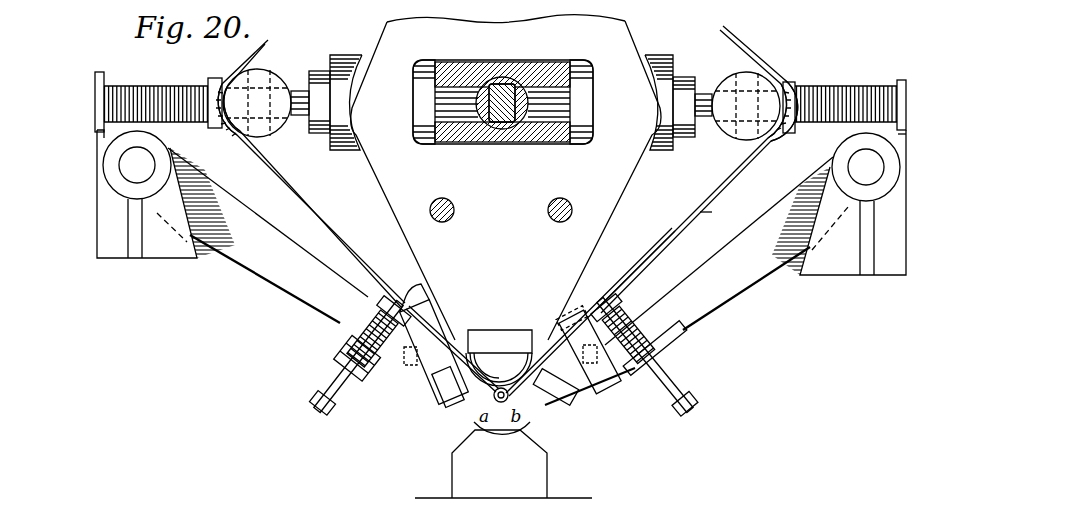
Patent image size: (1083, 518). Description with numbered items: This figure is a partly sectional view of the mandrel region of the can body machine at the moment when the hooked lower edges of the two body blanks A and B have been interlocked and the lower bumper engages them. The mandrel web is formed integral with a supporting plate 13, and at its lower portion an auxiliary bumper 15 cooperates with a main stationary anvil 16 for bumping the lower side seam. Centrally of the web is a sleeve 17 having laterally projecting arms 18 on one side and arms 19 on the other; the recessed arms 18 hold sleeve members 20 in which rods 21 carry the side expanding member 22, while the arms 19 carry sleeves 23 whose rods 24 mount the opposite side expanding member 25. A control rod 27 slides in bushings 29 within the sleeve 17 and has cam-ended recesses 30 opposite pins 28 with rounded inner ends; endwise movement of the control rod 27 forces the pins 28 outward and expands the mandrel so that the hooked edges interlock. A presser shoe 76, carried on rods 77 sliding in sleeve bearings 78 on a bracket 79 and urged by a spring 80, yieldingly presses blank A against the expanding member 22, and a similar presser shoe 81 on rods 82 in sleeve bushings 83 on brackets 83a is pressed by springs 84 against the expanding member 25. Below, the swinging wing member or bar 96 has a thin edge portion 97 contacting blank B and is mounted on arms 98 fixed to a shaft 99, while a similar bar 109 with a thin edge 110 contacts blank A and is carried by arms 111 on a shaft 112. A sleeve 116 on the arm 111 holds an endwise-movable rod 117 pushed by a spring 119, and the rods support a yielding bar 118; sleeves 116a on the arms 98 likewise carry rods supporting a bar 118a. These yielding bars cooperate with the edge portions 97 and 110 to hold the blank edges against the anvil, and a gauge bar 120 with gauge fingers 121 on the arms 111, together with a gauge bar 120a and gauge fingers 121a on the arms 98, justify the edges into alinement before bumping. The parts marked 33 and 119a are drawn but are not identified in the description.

The supporting plate 13 is at (612, 180).
The auxiliary bumper 15 is at (504, 337).
The main stationary anvil 16 is at (503, 460).
The sleeve 17 is at (573, 130).
The laterally projecting arms 18 is at (347, 58).
The laterally projecting arms 19 is at (656, 76).
The sleeve members 20 is at (422, 86).
The rods 21 is at (300, 115).
The side expanding member 22 is at (263, 86).
The sleeves 23 is at (584, 110).
The rods 24 is at (705, 94).
The side expanding member 25 is at (738, 128).
The control rod 27 is at (514, 92).
The pin 28 is at (455, 104).
The bushings 29 is at (497, 78).
The recesses 30 is at (526, 82).
The hole 33 is at (445, 220).
The presser shoe 76 is at (218, 76).
The rods 77 is at (126, 90).
The sleeve bearings 78 is at (101, 72).
The bracket 79 is at (168, 248).
The spring 80 is at (196, 90).
The presser shoe 81 is at (783, 82).
The rods 82 is at (840, 104).
The sleeve bushings 83 is at (902, 82).
The brackets 83a is at (830, 268).
The springs 84 is at (800, 96).
The wing member 96 is at (548, 404).
The thin projecting edge portion 97 is at (499, 369).
The arms 98 is at (752, 284).
The shaft 99 is at (866, 167).
The bar 109 is at (445, 374).
The thin edge 110 is at (494, 400).
The arms 111 is at (257, 270).
The shaft 112 is at (145, 163).
The sleeve 116 is at (358, 350).
The sleeves 116a is at (678, 372).
The rod 117 is at (314, 394).
The bar 118 is at (403, 303).
The bar 118a is at (605, 312).
The springs 119 is at (336, 376).
The bolt 119a is at (642, 353).
The gauge bar 120 is at (430, 306).
The gauge bar 120a is at (582, 306).
The gauge fingers 121 is at (408, 370).
The gauge fingers 121a is at (598, 392).
The body blank A is at (310, 173).
The body blank B is at (697, 169).